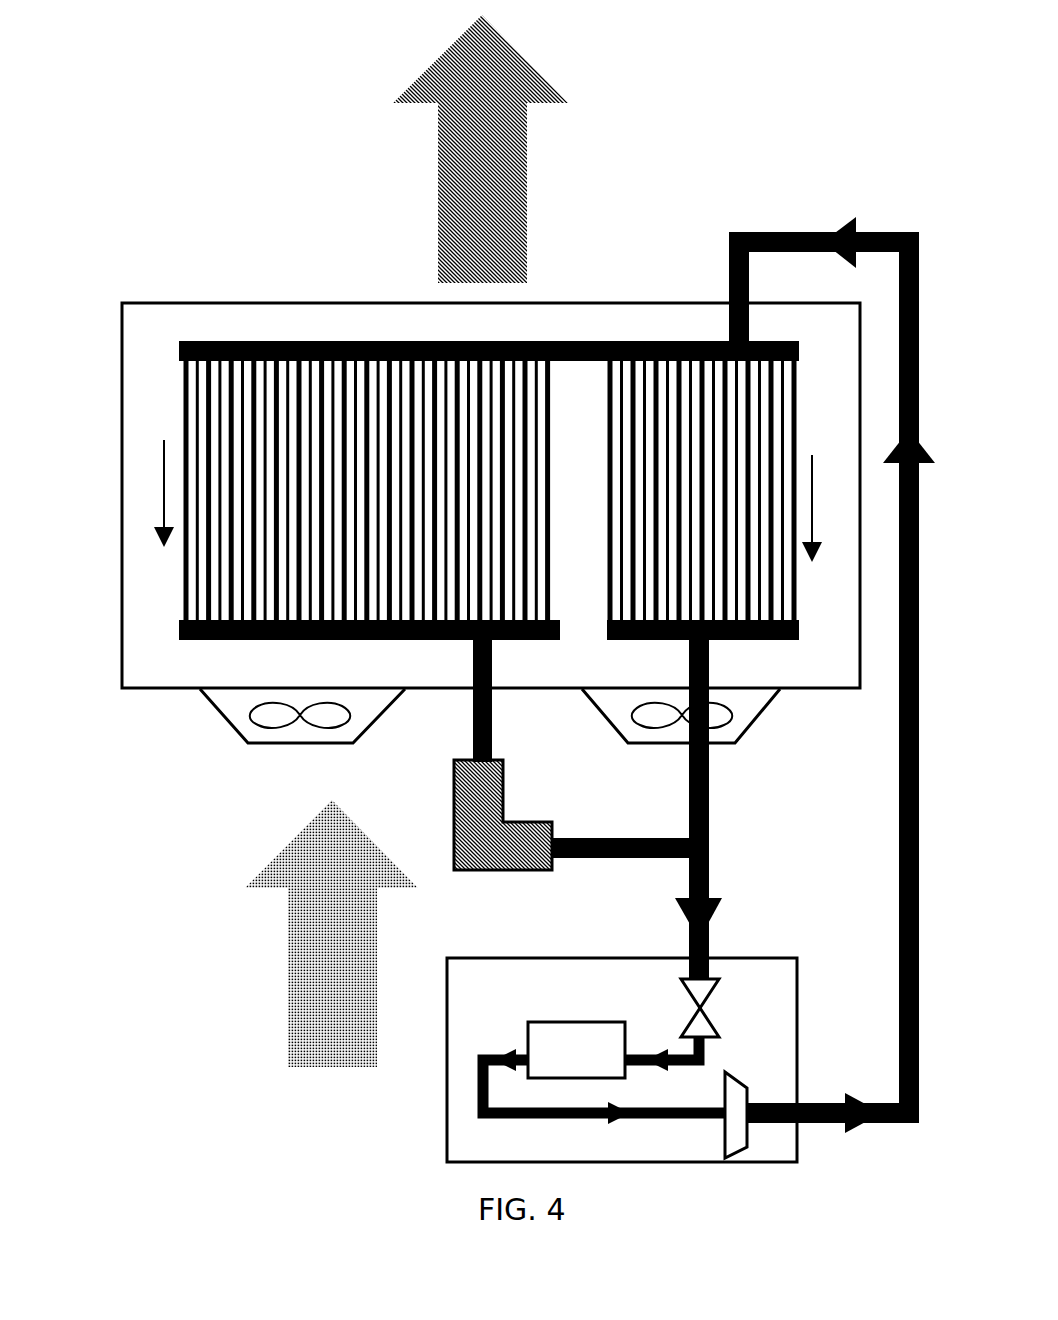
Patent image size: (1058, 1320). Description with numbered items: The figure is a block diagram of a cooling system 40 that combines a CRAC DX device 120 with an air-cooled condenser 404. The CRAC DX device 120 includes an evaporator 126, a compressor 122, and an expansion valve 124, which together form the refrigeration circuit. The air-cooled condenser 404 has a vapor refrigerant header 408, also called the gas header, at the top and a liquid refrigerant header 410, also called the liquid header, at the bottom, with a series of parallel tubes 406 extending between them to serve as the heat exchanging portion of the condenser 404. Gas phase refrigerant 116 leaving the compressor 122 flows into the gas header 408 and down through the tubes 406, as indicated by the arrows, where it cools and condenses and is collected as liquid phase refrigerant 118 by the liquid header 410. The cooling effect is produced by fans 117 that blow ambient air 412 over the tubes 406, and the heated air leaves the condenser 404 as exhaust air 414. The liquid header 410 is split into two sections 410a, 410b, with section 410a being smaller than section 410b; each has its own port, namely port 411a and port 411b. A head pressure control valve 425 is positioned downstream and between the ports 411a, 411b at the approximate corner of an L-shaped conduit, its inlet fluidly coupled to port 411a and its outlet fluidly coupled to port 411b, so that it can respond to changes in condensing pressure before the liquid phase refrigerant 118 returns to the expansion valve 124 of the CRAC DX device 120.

The cooling system 40 is at (183, 141).
The air-cooled condenser 404 is at (181, 303).
The vapor refrigerant header 408 is at (282, 340).
The parallel tubes 406 is at (203, 440).
The liquid refrigerant header 410 is at (165, 620).
The liquid header section 410a is at (733, 643).
The liquid header section 410b is at (180, 640).
The port 411a is at (690, 645).
The port 411b is at (478, 645).
The air moving devices 117 is at (248, 725).
The liquid phase refrigerant 118 is at (688, 775).
The head pressure control valve 425 is at (458, 788).
The exhaust air 414 is at (442, 192).
The ambient air 412 is at (298, 930).
The gas phase refrigerant 116 is at (725, 278).
The CRAC DX device 120 is at (463, 1113).
The expansion valve 124 is at (690, 1018).
The evaporator 126 is at (542, 1040).
The compressor 122 is at (720, 1125).